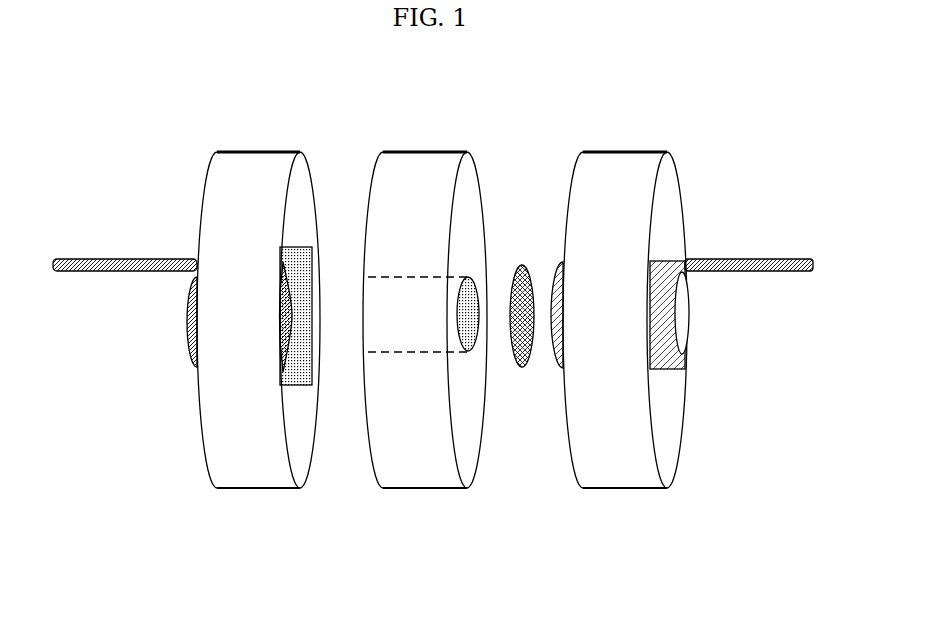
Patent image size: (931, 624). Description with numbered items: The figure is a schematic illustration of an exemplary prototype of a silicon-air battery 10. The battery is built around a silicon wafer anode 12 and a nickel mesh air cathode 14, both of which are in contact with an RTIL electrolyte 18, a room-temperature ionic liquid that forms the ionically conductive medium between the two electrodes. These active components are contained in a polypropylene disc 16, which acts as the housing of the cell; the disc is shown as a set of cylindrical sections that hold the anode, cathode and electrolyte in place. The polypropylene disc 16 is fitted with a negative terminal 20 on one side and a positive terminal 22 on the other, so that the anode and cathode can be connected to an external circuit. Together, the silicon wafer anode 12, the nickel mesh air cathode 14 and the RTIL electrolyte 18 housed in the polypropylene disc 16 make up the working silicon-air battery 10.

The silicon-air battery 10 is at (775, 77).
The silicon wafer anode 12 is at (303, 273).
The nickel mesh air cathode 14 is at (523, 282).
The polypropylene disc 16 is at (268, 460).
The RTIL electrolyte 18 is at (373, 313).
The negative terminal 20 is at (132, 252).
The positive terminal 22 is at (728, 257).